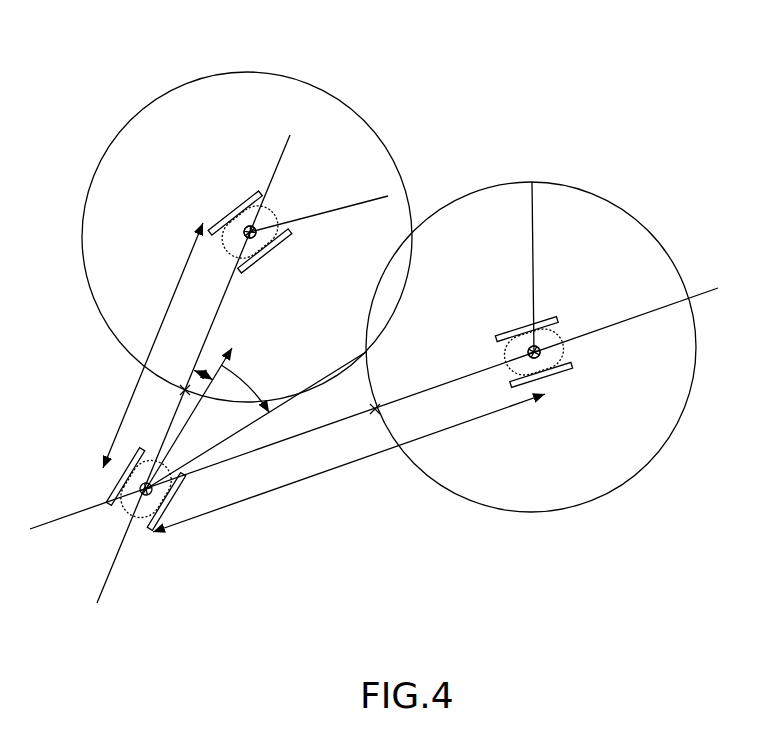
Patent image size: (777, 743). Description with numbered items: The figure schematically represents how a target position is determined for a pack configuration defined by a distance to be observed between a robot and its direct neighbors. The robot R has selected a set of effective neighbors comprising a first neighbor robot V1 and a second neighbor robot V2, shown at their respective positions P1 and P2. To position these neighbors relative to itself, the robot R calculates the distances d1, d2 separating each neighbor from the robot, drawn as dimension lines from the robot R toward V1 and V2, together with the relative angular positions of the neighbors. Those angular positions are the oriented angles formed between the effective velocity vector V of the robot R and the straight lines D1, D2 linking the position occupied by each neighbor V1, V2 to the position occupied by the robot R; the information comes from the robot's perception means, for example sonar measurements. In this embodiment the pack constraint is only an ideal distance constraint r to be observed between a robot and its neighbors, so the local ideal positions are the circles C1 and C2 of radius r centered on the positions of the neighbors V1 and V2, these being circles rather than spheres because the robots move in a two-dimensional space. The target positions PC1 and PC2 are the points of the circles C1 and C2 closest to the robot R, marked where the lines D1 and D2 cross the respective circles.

The circle C1 is at (133, 115).
The circle C2 is at (578, 188).
The first straight line direction D1 is at (120, 555).
The second straight line direction D2 is at (697, 296).
The first position point P1 is at (257, 237).
The second position point P2 is at (543, 357).
The first neighbor robot V1 is at (242, 208).
The second neighbor robot V2 is at (520, 328).
The robot R is at (139, 495).
The ideal distance constraint r is at (400, 265).
The distance d1 is at (153, 345).
The distance d2 is at (349, 463).
The effective velocity vector V is at (254, 322).
The target position PC1 is at (183, 390).
The target position PC2 is at (375, 409).